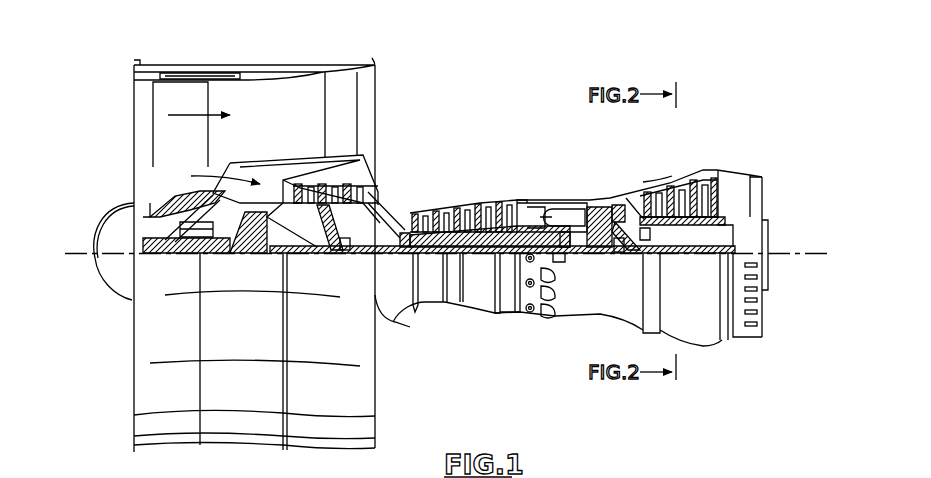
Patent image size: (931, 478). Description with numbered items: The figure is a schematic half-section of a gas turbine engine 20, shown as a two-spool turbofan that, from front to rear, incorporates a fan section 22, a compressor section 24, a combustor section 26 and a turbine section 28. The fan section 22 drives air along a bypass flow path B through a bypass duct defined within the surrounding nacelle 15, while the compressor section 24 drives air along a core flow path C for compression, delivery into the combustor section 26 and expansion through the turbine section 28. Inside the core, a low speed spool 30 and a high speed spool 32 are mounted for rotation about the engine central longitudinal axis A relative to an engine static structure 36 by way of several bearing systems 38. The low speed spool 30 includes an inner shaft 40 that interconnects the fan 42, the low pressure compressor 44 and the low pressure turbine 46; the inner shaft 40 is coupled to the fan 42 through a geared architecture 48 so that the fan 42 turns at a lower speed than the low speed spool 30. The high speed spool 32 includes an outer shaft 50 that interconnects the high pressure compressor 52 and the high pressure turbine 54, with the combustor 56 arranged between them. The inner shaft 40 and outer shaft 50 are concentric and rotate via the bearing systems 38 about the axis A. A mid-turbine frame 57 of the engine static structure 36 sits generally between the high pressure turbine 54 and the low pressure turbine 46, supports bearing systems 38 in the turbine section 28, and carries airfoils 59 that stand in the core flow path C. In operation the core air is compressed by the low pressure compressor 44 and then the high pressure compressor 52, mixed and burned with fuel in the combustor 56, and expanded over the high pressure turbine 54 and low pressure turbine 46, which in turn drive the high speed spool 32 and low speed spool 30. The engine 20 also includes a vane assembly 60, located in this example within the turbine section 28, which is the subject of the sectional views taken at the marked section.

The nacelle 15 is at (256, 67).
The gas turbine engine 20 is at (560, 100).
The fan section 22 is at (207, 58).
The compressor section 24 is at (408, 186).
The combustor section 26 is at (558, 186).
The turbine section 28 is at (660, 157).
The low speed spool 30 is at (478, 258).
The high speed spool 32 is at (510, 212).
The engine static structure 36 is at (507, 316).
The bearing systems 38 is at (347, 257).
The inner shaft 40 is at (396, 306).
The fan 42 is at (196, 153).
The low pressure compressor 44 is at (345, 167).
The low pressure turbine 46 is at (683, 178).
The geared architecture 48 is at (257, 258).
The outer shaft 50 is at (562, 253).
The high pressure compressor 52 is at (458, 207).
The high pressure turbine 54 is at (612, 200).
The combustor 56 is at (562, 210).
The mid-turbine frame 57 is at (630, 190).
The airfoils 59 is at (650, 232).
The vane assembly 60 is at (665, 178).
The engine central longitudinal axis A is at (823, 253).
The bypass flow path B is at (190, 114).
The core flow path C is at (216, 176).